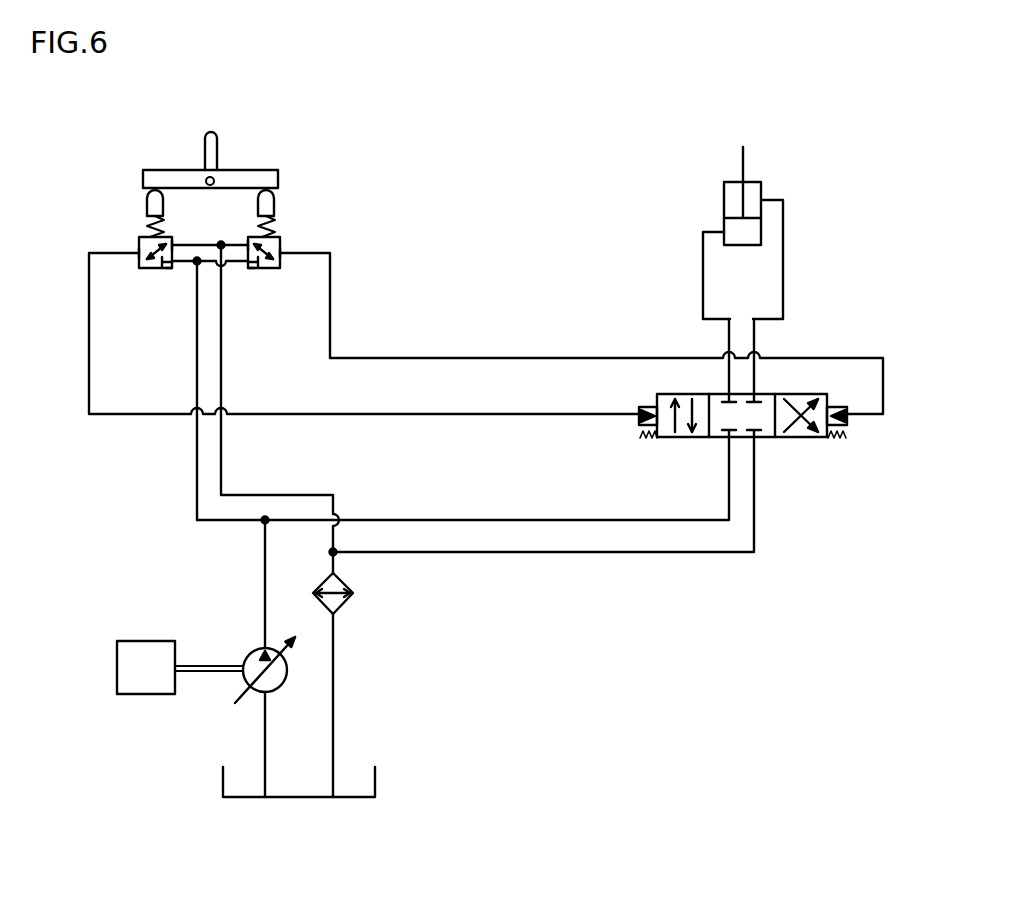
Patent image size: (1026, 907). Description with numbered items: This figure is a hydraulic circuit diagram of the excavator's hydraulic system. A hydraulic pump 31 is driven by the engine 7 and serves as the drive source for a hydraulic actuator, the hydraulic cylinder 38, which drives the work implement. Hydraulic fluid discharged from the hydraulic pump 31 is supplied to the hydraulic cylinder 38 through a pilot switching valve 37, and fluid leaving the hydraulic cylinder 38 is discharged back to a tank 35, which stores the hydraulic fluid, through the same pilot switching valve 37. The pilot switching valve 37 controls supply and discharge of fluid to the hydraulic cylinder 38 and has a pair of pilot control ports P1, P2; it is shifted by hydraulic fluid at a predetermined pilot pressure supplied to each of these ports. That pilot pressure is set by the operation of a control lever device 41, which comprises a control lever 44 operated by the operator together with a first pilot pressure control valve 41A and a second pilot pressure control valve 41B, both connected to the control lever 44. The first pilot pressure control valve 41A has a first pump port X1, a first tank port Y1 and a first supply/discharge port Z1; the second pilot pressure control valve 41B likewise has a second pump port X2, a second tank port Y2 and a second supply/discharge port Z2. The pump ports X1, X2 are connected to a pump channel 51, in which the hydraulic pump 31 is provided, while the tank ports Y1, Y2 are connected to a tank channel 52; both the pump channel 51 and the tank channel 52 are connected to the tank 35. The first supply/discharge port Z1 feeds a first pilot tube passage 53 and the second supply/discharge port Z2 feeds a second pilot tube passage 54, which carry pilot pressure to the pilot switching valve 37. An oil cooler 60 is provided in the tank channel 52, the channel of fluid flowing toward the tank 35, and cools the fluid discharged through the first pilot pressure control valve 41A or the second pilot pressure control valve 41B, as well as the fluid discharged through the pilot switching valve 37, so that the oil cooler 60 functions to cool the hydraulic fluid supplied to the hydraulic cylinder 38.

The control lever device 41 is at (137, 150).
The control lever 44 is at (217, 141).
The first pilot pressure control valve 41A is at (139, 241).
The second pilot pressure control valve 41B is at (281, 241).
The first tank port Y1 is at (177, 241).
The second tank port Y2 is at (247, 241).
The first supply/discharge port Z1 is at (139, 262).
The first pump port X1 is at (172, 264).
The second pump port X2 is at (250, 264).
The second supply/discharge port Z2 is at (281, 262).
The first pilot tube passage 53 is at (89, 318).
The second pilot tube passage 54 is at (330, 318).
The hydraulic cylinder 38 is at (719, 183).
The pilot switching valve 37 is at (786, 450).
The pilot control port P1 is at (641, 404).
The pilot control port P2 is at (851, 428).
The pump channel 51 is at (265, 566).
The hydraulic pump 31 is at (247, 652).
The engine 7 is at (145, 697).
The oil cooler 60 is at (345, 610).
The tank channel 52 is at (335, 675).
The tank 35 is at (302, 800).